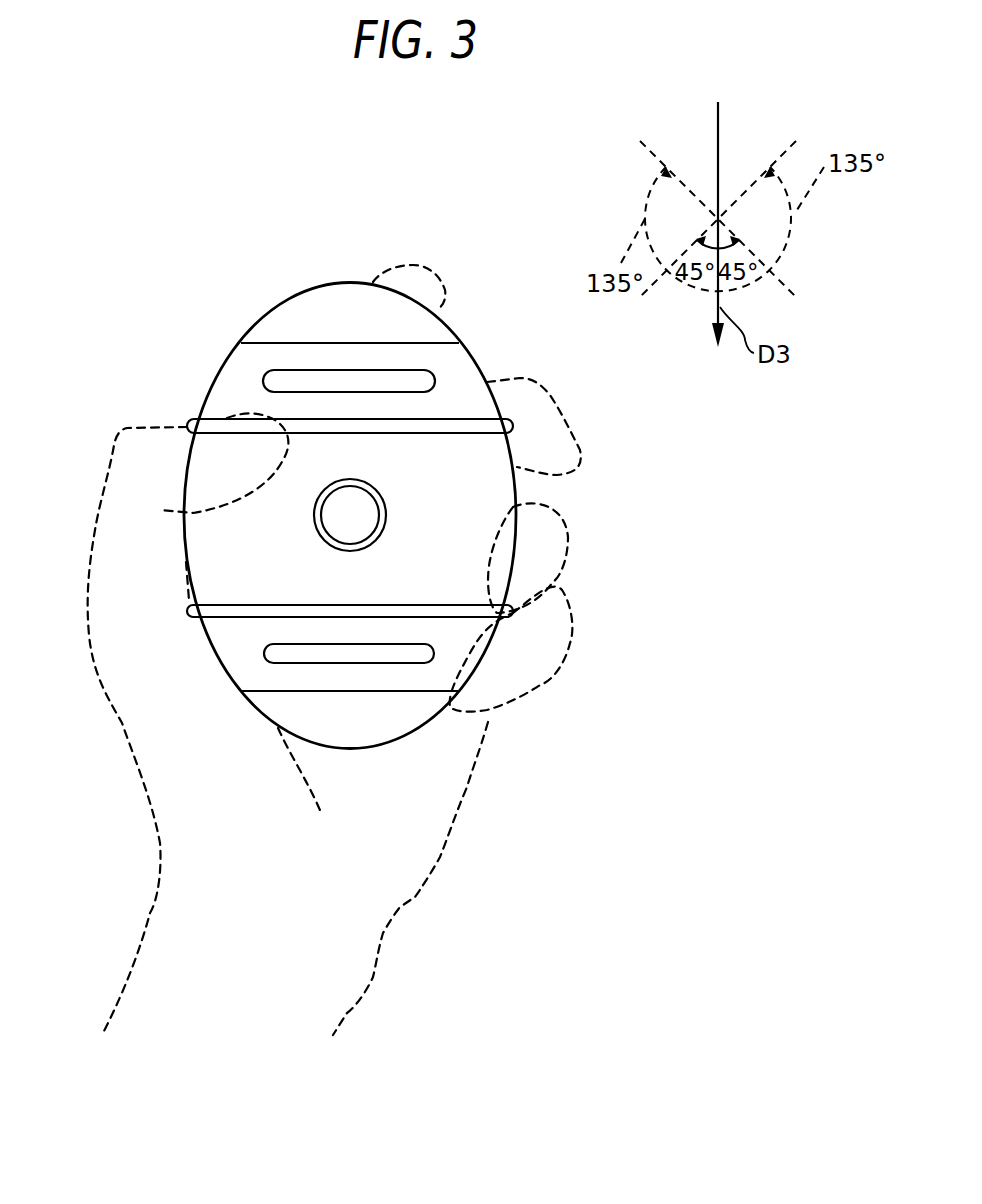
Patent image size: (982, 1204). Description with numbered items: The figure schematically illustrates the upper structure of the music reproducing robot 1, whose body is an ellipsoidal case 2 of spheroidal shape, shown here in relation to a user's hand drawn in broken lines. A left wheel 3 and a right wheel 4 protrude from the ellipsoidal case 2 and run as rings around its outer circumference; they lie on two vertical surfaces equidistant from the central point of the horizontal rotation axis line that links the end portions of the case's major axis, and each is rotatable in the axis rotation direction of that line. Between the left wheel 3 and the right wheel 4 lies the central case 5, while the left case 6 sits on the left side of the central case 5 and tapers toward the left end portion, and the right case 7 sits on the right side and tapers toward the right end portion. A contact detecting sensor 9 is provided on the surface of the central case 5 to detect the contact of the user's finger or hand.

The music reproducing robot 1 is at (323, 464).
The ellipsoidal case 2 is at (570, 492).
The left wheel 3 is at (190, 421).
The right wheel 4 is at (187, 612).
The central case 5 is at (183, 530).
The left case 6 is at (473, 356).
The right case 7 is at (485, 667).
The contact detecting sensor 9 is at (387, 528).